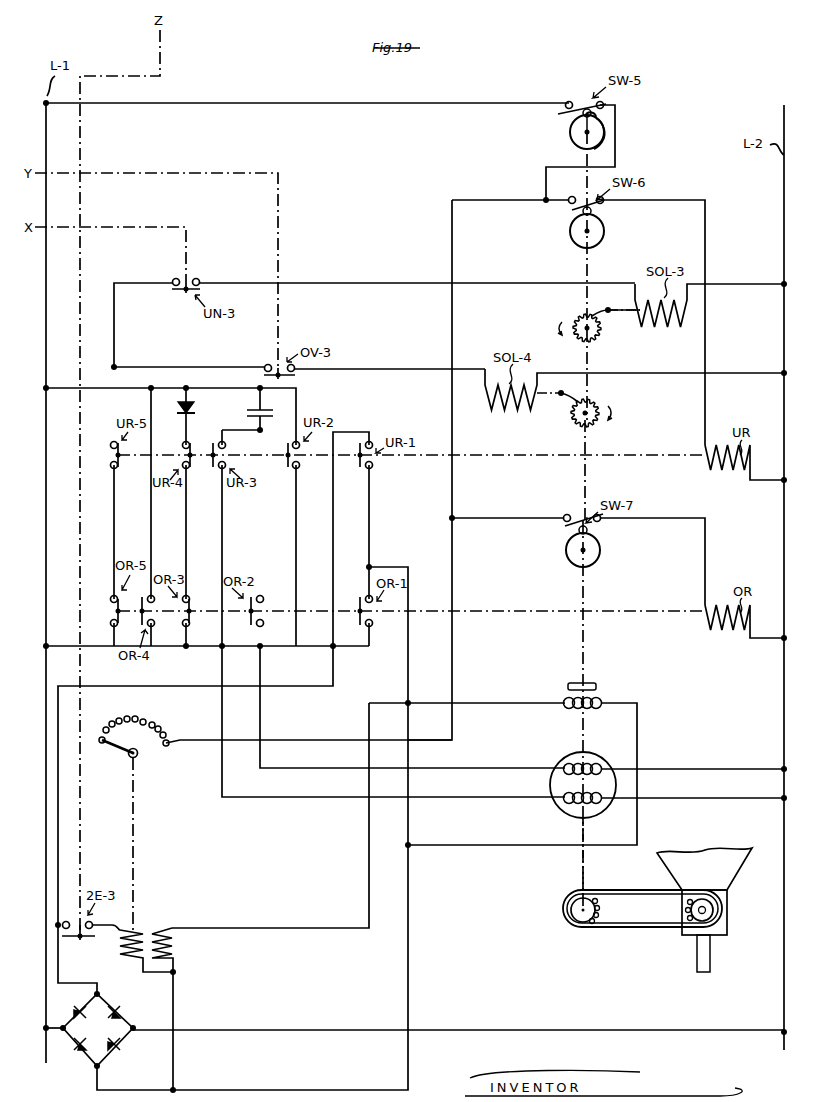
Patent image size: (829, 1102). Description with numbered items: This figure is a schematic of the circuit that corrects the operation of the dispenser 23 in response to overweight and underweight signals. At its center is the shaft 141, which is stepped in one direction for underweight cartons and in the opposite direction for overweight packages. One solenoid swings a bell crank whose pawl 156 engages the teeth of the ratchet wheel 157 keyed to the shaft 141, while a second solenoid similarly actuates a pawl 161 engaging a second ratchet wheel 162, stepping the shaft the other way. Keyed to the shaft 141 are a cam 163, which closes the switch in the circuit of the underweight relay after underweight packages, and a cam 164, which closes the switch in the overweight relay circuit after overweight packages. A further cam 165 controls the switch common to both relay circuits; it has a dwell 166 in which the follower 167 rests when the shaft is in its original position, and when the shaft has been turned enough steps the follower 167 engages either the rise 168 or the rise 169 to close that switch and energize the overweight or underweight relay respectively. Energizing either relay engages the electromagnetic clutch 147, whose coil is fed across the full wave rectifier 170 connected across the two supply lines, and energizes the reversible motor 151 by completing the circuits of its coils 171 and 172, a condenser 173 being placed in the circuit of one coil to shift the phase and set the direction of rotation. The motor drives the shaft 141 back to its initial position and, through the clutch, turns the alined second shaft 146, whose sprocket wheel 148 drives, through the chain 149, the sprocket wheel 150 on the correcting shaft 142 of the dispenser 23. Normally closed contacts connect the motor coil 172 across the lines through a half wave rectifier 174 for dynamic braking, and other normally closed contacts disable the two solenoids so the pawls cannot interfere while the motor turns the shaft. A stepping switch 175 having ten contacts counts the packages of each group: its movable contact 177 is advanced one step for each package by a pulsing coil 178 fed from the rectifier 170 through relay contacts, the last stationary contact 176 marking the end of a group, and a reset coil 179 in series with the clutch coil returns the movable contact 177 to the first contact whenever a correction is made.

The dispenser 23 is at (728, 850).
The shaft 141 is at (588, 583).
The correcting shaft 142 is at (702, 914).
The second shaft 146 is at (581, 858).
The electromagnetic clutch 147 is at (557, 694).
The sprocket wheel 148 is at (598, 922).
The chain 149 is at (667, 926).
The sprocket wheel 150 is at (642, 908).
The reversible motor 151 is at (564, 808).
The pawl 156 is at (596, 314).
The ratchet wheel 157 is at (599, 335).
The pawl 161 is at (575, 406).
The ratchet wheel 162 is at (577, 421).
The cam 163 is at (604, 236).
The cam 164 is at (566, 556).
The cam 165 is at (600, 146).
The dwell 166 is at (604, 121).
The follower 167 is at (576, 114).
The rise 168 is at (566, 133).
The rise 169 is at (605, 135).
The full wave rectifier 170 is at (76, 1059).
The motor coil 171 is at (572, 763).
The motor coil 172 is at (590, 806).
The condenser 173 is at (250, 416).
The half wave rectifier 174 is at (176, 403).
The stepping switch 175 is at (167, 730).
The selector switch terminal 176 is at (168, 746).
The movable contact 177 is at (120, 748).
The pulsing coil 178 is at (138, 930).
The reset coil 179 is at (174, 940).